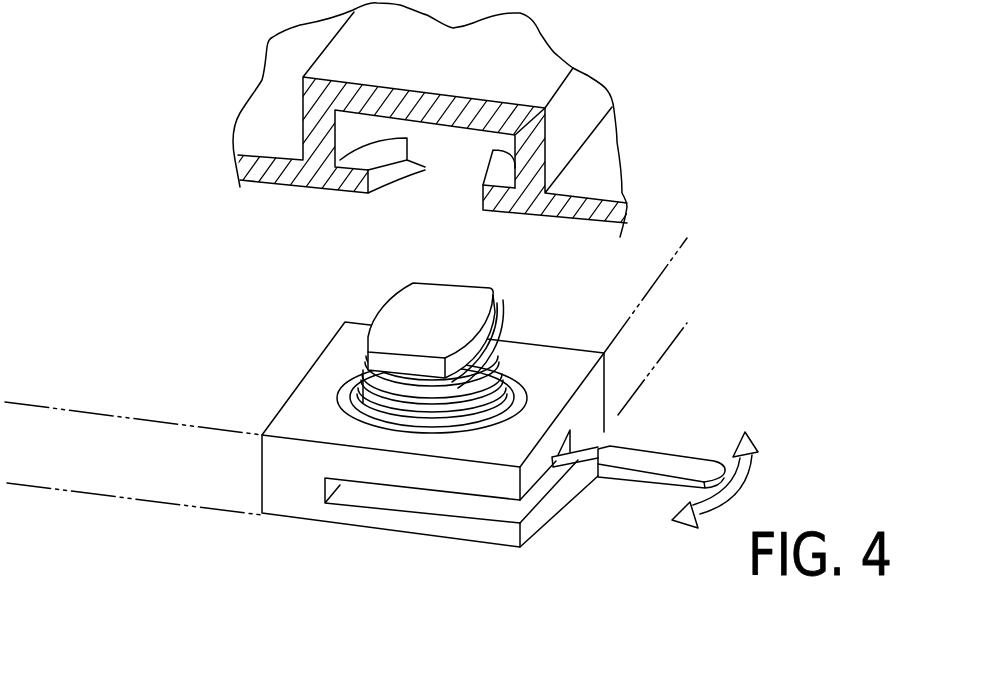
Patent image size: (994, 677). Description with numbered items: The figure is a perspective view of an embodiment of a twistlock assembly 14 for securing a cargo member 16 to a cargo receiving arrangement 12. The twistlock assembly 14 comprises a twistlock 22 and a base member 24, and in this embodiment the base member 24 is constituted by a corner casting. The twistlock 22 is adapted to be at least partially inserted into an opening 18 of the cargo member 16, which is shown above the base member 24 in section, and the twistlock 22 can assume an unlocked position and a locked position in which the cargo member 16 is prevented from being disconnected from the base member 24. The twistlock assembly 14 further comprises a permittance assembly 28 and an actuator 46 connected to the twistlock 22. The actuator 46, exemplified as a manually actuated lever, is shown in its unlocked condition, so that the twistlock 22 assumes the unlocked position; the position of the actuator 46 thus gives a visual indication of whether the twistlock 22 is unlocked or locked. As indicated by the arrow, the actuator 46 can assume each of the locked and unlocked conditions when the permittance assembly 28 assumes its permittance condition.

The cargo receiving arrangement 12 is at (98, 495).
The twistlock assembly 14 is at (750, 297).
The cargo member 16 is at (290, 183).
The opening 18 is at (438, 143).
The twistlock 22 is at (427, 320).
The base member 24 is at (313, 407).
The permittance assembly 28 is at (503, 328).
The actuator 46 is at (668, 463).